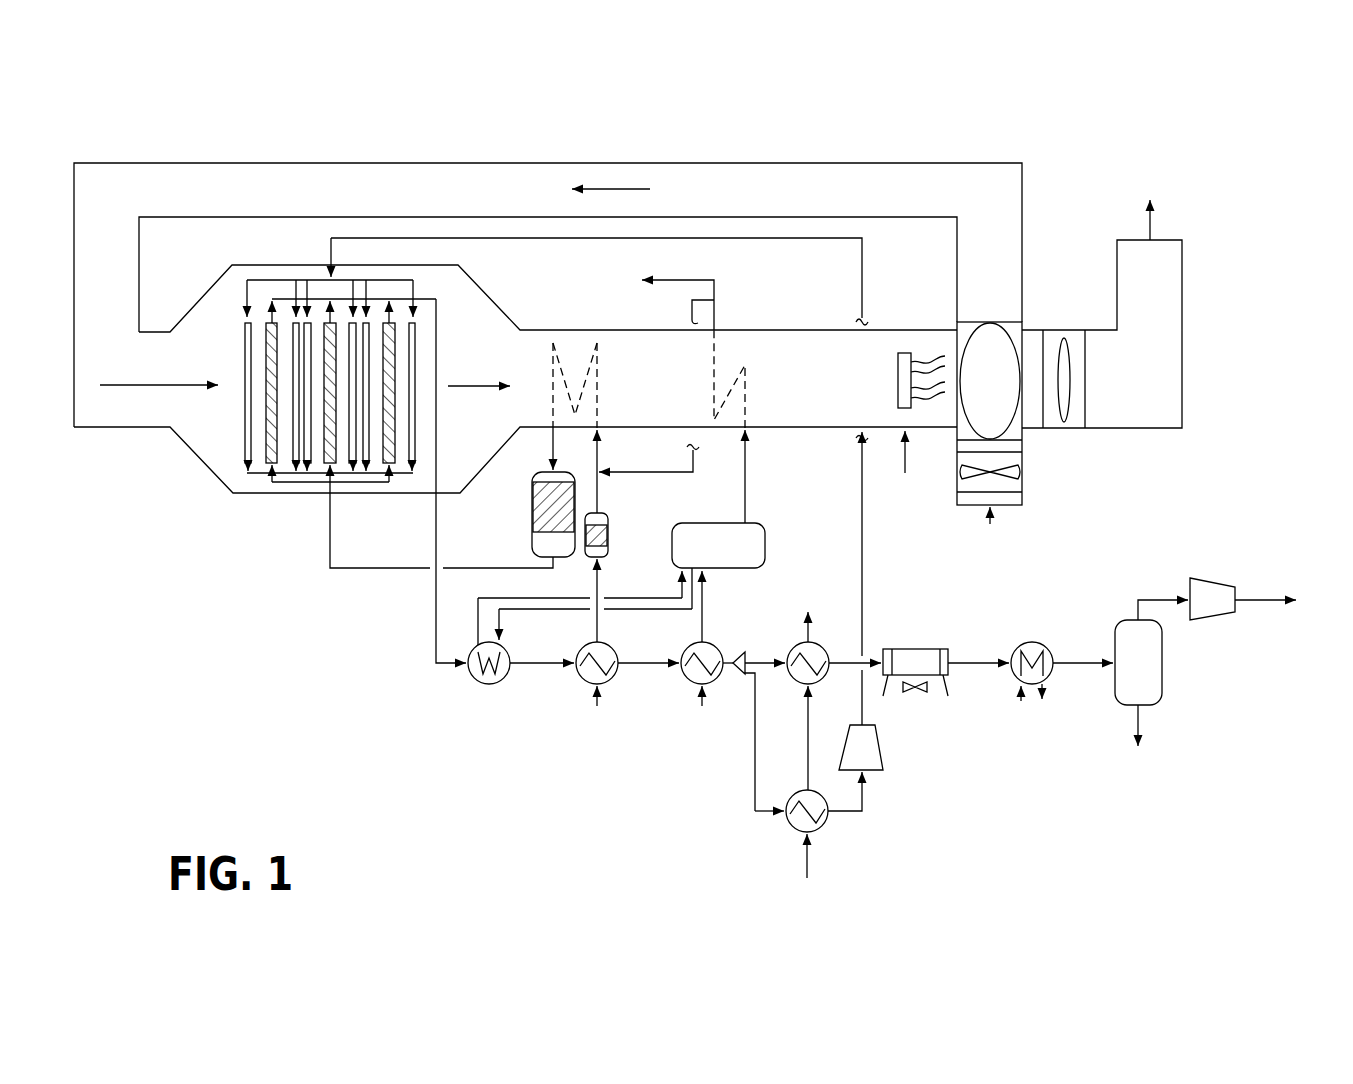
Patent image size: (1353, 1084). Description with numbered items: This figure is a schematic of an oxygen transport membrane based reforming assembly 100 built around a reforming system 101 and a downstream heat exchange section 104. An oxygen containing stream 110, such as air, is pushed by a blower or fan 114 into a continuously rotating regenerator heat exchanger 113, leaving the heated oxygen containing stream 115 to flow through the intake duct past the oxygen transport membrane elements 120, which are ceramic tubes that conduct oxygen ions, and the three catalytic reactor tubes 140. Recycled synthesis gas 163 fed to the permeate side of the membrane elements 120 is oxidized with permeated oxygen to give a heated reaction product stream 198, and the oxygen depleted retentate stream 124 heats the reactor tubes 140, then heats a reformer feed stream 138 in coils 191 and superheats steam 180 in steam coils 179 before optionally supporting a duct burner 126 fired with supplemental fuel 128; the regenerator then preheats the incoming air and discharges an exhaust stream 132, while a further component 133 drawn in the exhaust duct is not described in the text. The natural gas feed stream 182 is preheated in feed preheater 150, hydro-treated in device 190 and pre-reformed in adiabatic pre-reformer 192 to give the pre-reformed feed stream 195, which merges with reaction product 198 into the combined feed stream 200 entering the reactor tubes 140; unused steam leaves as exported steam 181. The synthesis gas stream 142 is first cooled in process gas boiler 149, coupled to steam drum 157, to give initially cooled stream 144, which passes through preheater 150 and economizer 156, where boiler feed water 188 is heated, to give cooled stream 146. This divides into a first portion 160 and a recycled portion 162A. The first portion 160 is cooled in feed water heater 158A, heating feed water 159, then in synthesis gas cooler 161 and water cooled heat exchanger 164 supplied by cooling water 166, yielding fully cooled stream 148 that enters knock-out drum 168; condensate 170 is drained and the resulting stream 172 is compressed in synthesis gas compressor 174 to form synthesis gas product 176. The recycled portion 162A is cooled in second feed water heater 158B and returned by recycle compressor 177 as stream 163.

The assembly 100 is at (280, 140).
The oxygen transport membrane based reforming system 101 is at (177, 486).
The heat exchange section 104 is at (590, 765).
The oxygen containing stream 110 is at (993, 514).
The heat exchanger 113 is at (1002, 418).
The blower or fan 114 is at (958, 480).
The heated oxygen containing stream 115 is at (608, 190).
The oxygen transport membrane elements 120 is at (292, 372).
The heated retentate stream 124 is at (477, 387).
The duct burner 126 is at (898, 368).
The supplemental fuel stream 128 is at (905, 465).
The exhaust stream 132 is at (1155, 220).
The damper 133 is at (1064, 345).
The reformer feed stream 138 is at (600, 452).
The catalytic reactor tubes 140 is at (322, 338).
The synthesis gas stream 142 is at (436, 625).
The initially cooled synthesis gas stream 144 is at (540, 662).
The cooled synthesis gas stream 146 is at (738, 652).
The fully cooled synthesis gas stream 148 is at (1078, 665).
The process gas boiler 149 is at (482, 682).
The feed preheater 150 is at (582, 678).
The economizer 156 is at (686, 651).
The steam drum 157 is at (766, 545).
The feed water heater 158A is at (818, 642).
The second feed water heater 158B is at (829, 814).
The feed water stream 159 is at (809, 858).
The first portion 160 is at (758, 688).
The synthesis gas cooler 161 is at (947, 652).
The recycled portion 162A is at (755, 777).
The recycle synthesis gas stream 163 is at (862, 262).
The water cooled heat exchanger 164 is at (1040, 645).
The cooling water stream 166 is at (1019, 700).
The knock-out drum 168 is at (1158, 700).
The condensate stream 170 is at (1128, 722).
The fully cooled synthesis gas stream 172 is at (1148, 598).
The synthesis gas compressor 174 is at (1212, 618).
The synthesis gas product 176 is at (1283, 600).
The synthesis gas recycle compressor 177 is at (877, 772).
The steam coils 179 is at (746, 367).
The superheated steam 180 is at (690, 312).
The exported steam 181 is at (672, 280).
The hydrocarbon containing feed stream 182 is at (598, 703).
The boiler feed water 188 is at (702, 703).
The hydro-treating device 190 is at (608, 535).
The coils 191 is at (597, 390).
The adiabatic pre-reformer 192 is at (532, 508).
The pre-reformed reformer feed stream 195 is at (365, 570).
The reaction product stream 198 is at (303, 460).
The combined feed stream 200 is at (392, 470).